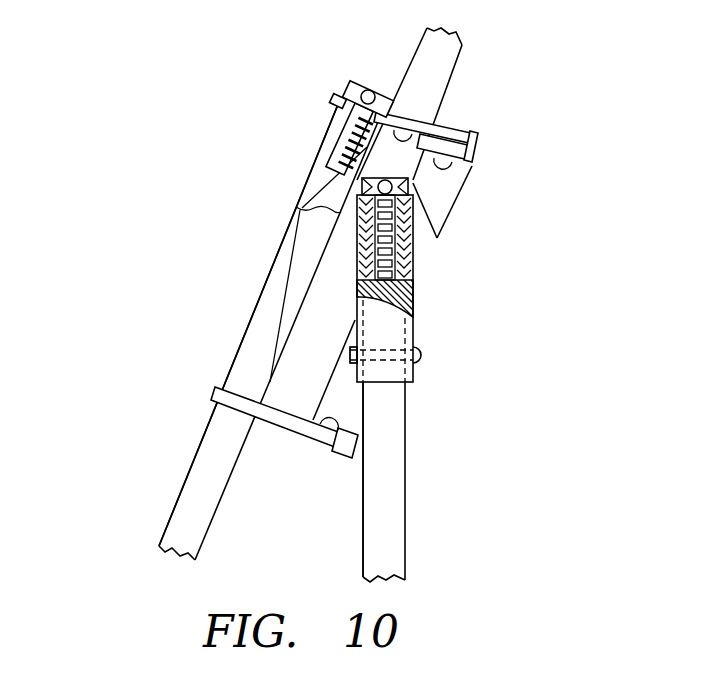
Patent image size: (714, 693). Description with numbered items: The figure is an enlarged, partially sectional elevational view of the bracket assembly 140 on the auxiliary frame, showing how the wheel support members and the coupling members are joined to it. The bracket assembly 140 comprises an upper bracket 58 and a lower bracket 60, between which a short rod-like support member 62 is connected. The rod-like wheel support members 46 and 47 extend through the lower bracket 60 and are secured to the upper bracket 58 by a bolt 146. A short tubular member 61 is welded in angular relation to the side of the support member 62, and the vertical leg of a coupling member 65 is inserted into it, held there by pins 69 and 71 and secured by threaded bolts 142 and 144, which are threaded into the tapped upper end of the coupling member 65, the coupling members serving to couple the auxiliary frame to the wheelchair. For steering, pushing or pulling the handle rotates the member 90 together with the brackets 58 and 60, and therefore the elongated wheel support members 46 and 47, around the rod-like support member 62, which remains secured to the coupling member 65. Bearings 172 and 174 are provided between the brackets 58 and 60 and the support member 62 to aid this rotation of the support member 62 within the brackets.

The bracket assembly 140 is at (250, 288).
The bolt 146 is at (352, 85).
The member 90 is at (440, 75).
The upper bracket 58 is at (433, 126).
The bearing 172 is at (473, 162).
The rod-like support member 62 is at (451, 279).
The threaded bolt 142 is at (437, 238).
The threaded bolt 144 is at (385, 237).
The tubular member 61 is at (395, 333).
The pin 69 is at (423, 357).
The pin 71 is at (353, 355).
The coupling member 65 is at (392, 532).
The wheel support member 46 is at (183, 517).
The wheel support member 47 is at (250, 321).
The lower bracket 60 is at (278, 425).
The bearing 174 is at (335, 425).